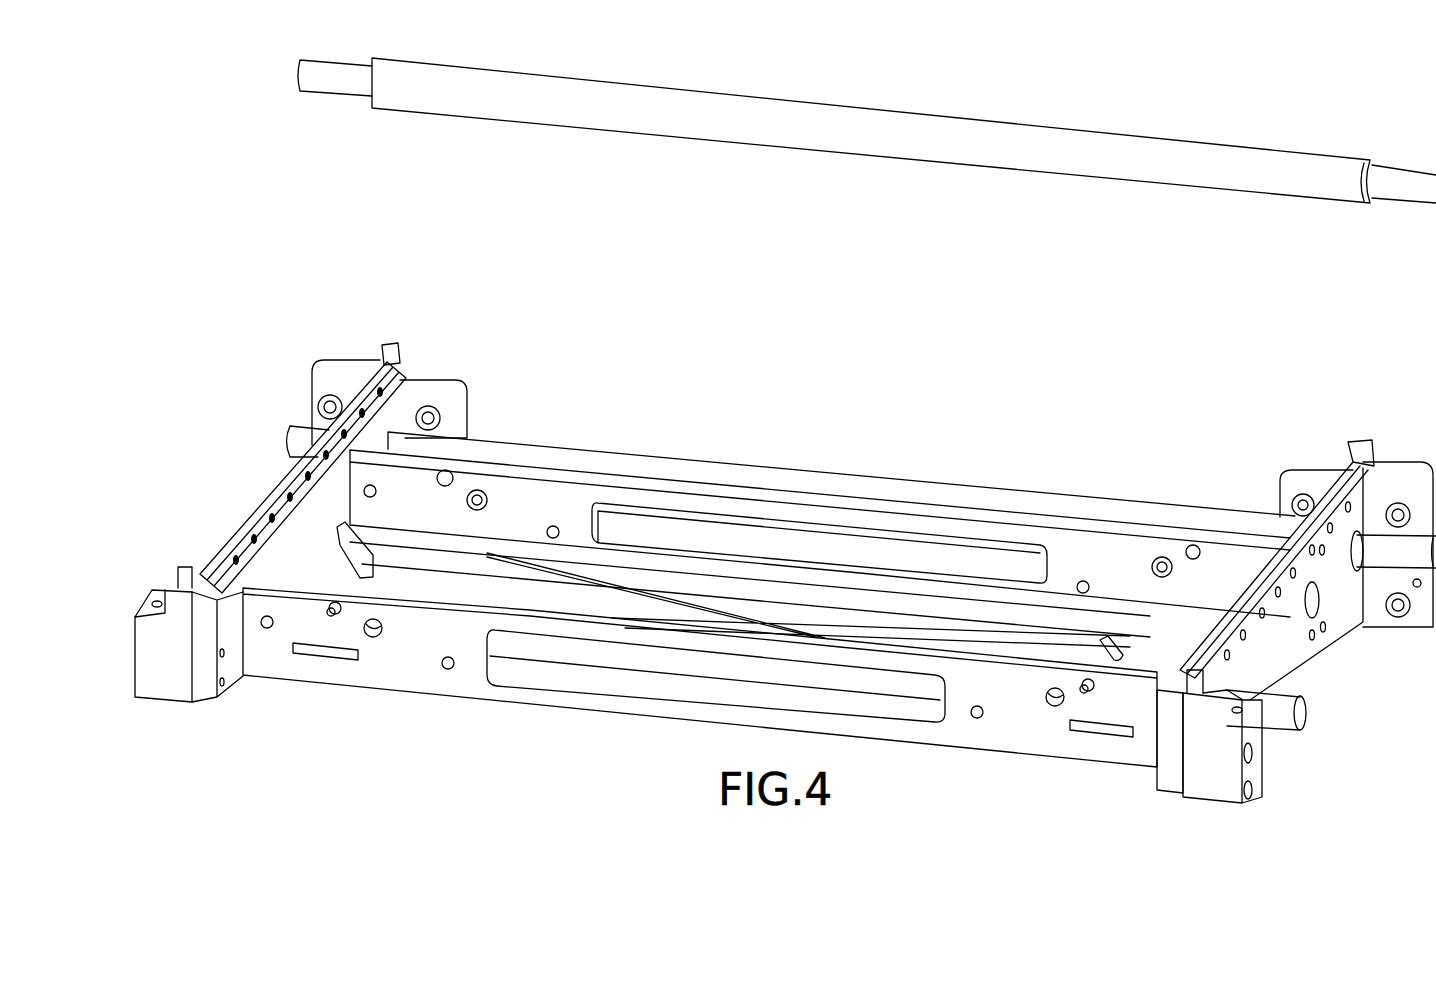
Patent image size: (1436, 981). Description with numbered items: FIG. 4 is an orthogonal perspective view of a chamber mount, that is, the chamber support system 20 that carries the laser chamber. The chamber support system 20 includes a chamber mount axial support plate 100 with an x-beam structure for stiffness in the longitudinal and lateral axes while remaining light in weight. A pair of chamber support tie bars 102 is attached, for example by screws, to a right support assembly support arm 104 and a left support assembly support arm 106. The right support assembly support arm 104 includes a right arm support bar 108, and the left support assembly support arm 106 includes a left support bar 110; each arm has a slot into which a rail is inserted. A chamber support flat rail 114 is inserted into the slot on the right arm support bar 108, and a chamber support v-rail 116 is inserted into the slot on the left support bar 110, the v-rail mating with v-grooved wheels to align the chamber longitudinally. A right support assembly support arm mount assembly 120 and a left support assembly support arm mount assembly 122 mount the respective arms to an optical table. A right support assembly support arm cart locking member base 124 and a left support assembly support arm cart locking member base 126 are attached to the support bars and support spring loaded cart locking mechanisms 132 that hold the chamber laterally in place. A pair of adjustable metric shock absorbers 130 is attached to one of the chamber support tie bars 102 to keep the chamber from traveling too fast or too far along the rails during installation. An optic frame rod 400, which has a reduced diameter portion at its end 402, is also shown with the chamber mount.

The chamber support system 20 is at (646, 746).
The chamber mount axial support plate 100 is at (1160, 605).
The chamber support tie bar 102 is at (805, 505).
The right support assembly support arm 104 is at (1164, 810).
The left support assembly support arm 106 is at (165, 724).
The right arm support bar 108 is at (1167, 773).
The left support bar 110 is at (225, 665).
The chamber support flat rail 114 is at (1340, 460).
The chamber support v-rail 116 is at (410, 378).
The right support assembly support arm mount assembly 120 is at (1403, 438).
The left support assembly support arm mount assembly 122 is at (350, 348).
The right support assembly support arm cart locking member base 124 is at (1228, 768).
The left support assembly support arm cart locking member base 126 is at (150, 625).
The adjustable metric shock absorber 130 is at (370, 577).
The spring loaded cart locking mechanism 132 is at (188, 574).
The optic frame rod 400 is at (838, 135).
The rod end portion 402 is at (327, 87).